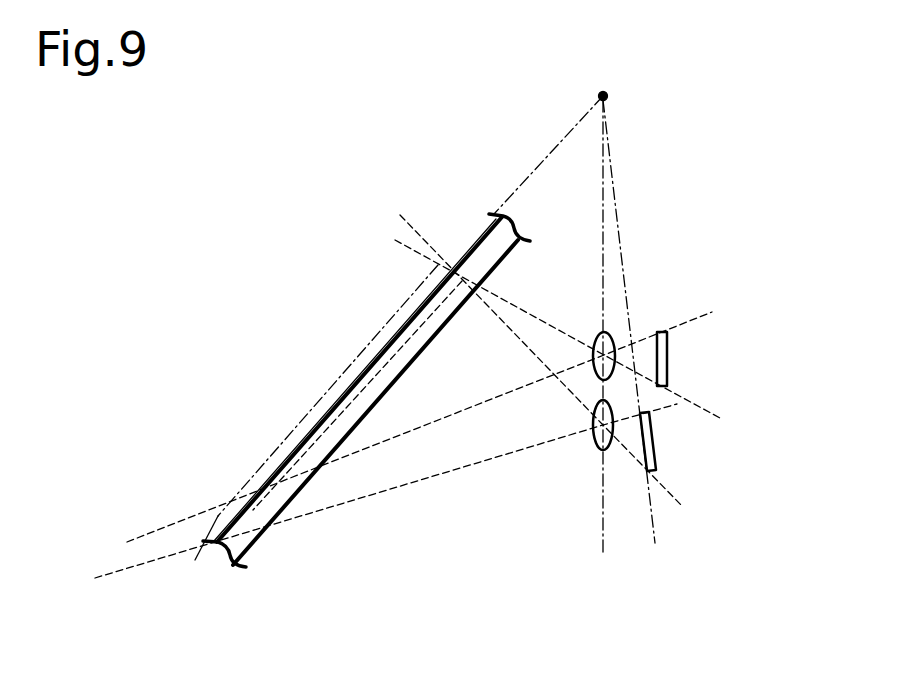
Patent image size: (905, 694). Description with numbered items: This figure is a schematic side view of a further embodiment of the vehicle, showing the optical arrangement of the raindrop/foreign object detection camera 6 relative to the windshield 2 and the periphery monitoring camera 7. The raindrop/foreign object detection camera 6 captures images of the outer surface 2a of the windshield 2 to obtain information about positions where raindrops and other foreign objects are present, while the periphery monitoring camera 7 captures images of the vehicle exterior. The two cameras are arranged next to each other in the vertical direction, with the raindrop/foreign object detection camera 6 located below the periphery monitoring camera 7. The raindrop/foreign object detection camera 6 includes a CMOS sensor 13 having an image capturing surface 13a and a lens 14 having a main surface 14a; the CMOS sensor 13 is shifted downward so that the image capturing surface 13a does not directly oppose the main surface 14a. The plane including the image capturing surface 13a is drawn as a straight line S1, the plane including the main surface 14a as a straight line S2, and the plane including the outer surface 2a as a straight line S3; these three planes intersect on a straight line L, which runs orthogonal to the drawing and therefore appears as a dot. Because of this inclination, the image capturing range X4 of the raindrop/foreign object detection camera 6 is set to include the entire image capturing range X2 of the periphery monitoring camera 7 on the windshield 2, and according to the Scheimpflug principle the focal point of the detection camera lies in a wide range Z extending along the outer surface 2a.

The windshield 2 is at (248, 532).
The outer surface 2a is at (370, 368).
The wide range Z is at (303, 417).
The straight line L is at (600, 96).
The straight line S1 is at (617, 200).
The straight line S2 is at (603, 213).
The straight line S3 is at (555, 150).
The image capturing range X2 is at (413, 250).
The image capturing range X4 is at (400, 226).
The periphery monitoring camera 7 is at (647, 322).
The raindrop/foreign object detection camera 6 is at (562, 466).
The lens 14 is at (593, 425).
The main surface 14a is at (598, 440).
The CMOS sensor 13 is at (655, 450).
The image capturing surface 13a is at (650, 455).